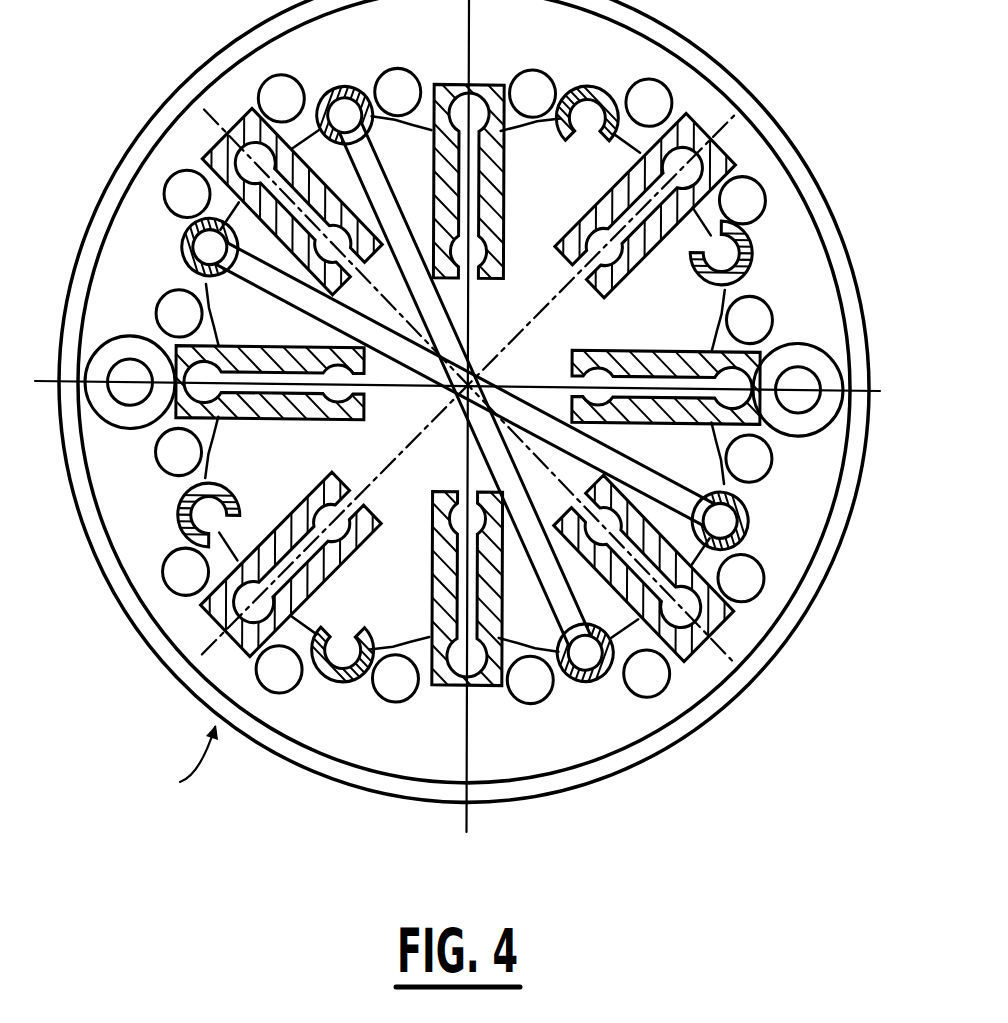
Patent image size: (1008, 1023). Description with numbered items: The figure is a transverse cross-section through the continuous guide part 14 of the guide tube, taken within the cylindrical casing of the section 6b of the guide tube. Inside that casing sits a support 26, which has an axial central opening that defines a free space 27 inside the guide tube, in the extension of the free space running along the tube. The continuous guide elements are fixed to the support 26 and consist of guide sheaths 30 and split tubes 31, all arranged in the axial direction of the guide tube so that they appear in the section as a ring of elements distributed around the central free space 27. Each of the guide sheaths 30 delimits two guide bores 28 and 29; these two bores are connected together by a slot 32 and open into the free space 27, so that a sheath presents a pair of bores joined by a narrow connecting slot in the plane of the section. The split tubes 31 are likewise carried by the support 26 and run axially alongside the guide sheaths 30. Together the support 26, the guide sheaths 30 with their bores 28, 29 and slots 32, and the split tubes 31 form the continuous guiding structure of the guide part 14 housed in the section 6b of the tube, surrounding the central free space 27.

The section of the guide tube 6b is at (181, 763).
The continuous guide part 14 is at (308, 757).
The support 26 is at (562, 750).
The free space 27 is at (510, 328).
The guide bore 28 is at (607, 283).
The guide bore 29 is at (468, 384).
The guide sheath 30 is at (688, 165).
The split tube 31 is at (750, 240).
The slot 32 is at (597, 201).